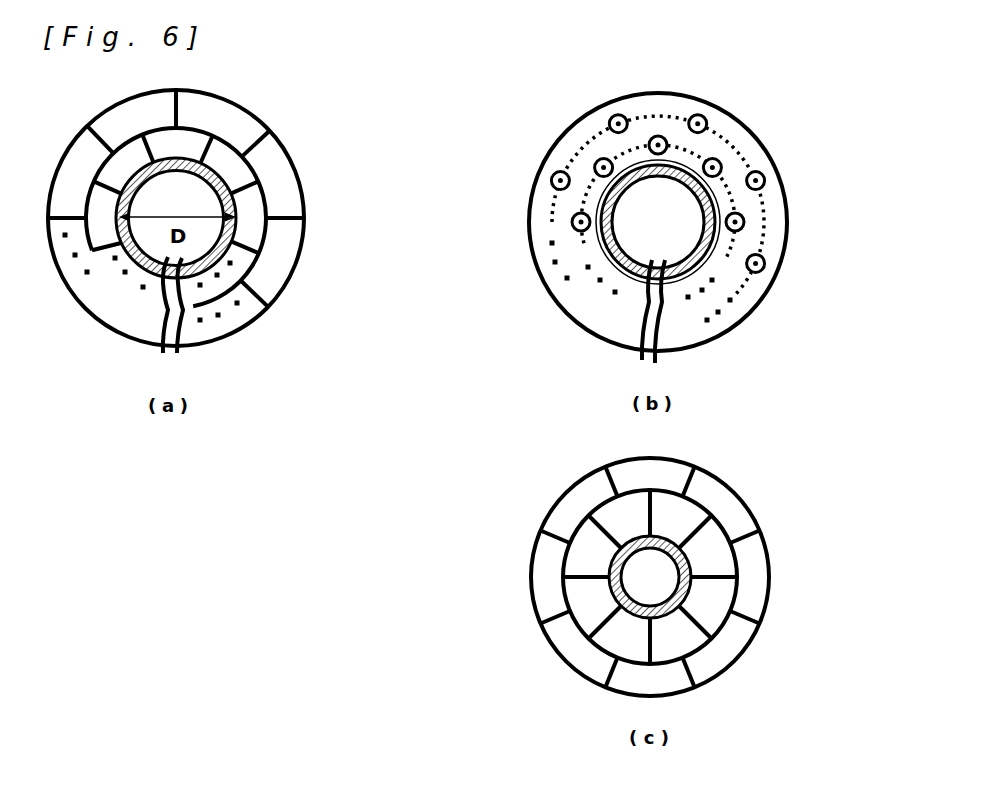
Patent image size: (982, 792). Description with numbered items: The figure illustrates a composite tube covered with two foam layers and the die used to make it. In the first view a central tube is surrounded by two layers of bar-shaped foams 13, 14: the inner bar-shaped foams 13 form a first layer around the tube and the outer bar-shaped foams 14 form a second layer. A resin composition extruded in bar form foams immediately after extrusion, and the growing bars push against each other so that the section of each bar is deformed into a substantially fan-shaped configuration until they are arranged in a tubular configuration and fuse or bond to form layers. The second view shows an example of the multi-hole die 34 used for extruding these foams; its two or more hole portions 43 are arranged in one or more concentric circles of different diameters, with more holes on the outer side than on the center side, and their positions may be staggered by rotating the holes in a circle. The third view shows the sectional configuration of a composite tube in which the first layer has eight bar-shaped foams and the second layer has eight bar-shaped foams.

The bar-shaped foam 13 is at (228, 217).
The bar-shaped foam 14 is at (229, 218).
The multi-hole die 34 is at (696, 211).
The hole portion 43 is at (712, 194).